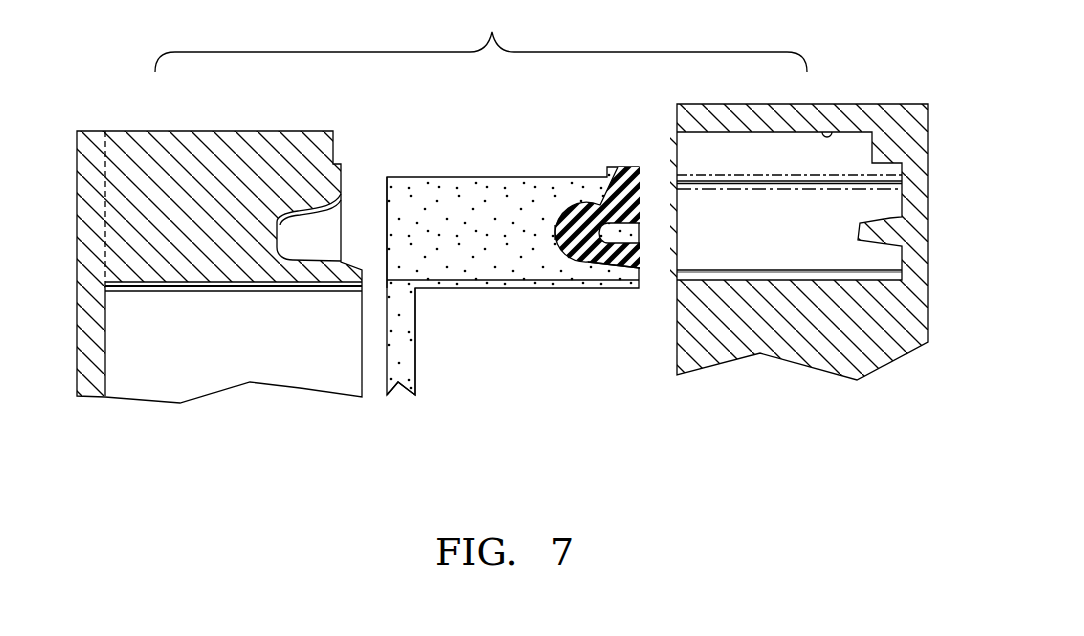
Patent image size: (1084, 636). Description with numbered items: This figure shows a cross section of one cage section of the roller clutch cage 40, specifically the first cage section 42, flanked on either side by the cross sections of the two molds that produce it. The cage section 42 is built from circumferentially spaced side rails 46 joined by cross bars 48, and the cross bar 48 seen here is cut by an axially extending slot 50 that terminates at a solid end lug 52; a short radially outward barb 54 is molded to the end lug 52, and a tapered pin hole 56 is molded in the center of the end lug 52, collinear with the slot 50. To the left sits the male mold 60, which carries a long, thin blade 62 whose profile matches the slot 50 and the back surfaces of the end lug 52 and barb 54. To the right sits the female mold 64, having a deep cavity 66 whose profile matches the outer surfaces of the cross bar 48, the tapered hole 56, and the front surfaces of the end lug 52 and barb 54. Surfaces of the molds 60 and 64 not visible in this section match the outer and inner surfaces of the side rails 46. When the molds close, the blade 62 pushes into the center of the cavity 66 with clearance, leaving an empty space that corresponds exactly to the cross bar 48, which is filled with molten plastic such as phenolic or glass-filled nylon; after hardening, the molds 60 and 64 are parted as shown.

The roller clutch cage 40 is at (513, 275).
The first cage section 42 is at (512, 297).
The side rail 46 is at (399, 393).
The cross bar 48 is at (477, 270).
The slot 50 is at (503, 192).
The end lug 52 is at (602, 273).
The barb 54 is at (624, 162).
The tapered pin hole 56 is at (546, 234).
The male mold 60 is at (116, 129).
The blade 62 is at (240, 153).
The female mold 64 is at (901, 99).
The cavity 66 is at (827, 131).